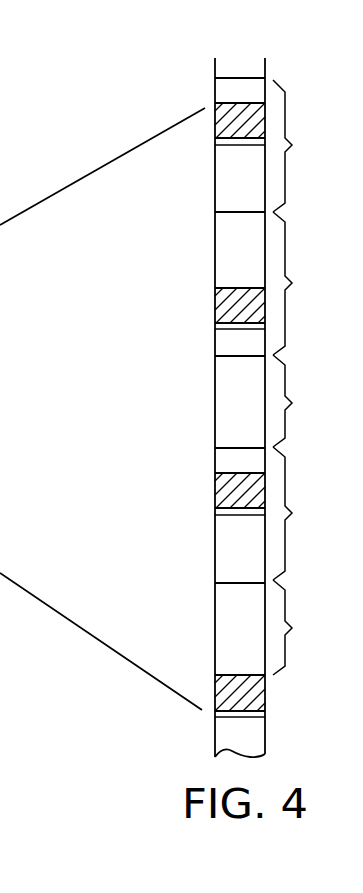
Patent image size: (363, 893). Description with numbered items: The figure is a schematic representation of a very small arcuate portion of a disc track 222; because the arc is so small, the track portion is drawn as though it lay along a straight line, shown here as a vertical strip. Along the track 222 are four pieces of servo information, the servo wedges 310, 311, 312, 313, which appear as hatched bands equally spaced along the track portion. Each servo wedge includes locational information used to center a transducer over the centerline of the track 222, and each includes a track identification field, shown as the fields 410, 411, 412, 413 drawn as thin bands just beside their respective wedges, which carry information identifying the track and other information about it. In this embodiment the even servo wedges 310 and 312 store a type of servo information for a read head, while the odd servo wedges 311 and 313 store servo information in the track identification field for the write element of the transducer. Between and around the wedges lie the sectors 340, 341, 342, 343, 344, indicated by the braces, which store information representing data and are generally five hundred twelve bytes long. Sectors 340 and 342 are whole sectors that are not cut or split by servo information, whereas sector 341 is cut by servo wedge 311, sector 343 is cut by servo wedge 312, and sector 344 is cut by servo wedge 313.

The track 222 is at (241, 75).
The servo wedge 310 is at (266, 692).
The servo wedge 311 is at (215, 498).
The servo wedge 312 is at (215, 312).
The servo wedge 313 is at (215, 128).
The track identification field 410 is at (237, 718).
The track identification field 411 is at (240, 517).
The track identification field 412 is at (240, 331).
The track identification field 413 is at (240, 147).
The sector 340 is at (292, 628).
The sector 341 is at (292, 513).
The sector 342 is at (292, 403).
The sector 343 is at (292, 283).
The sector 344 is at (292, 145).